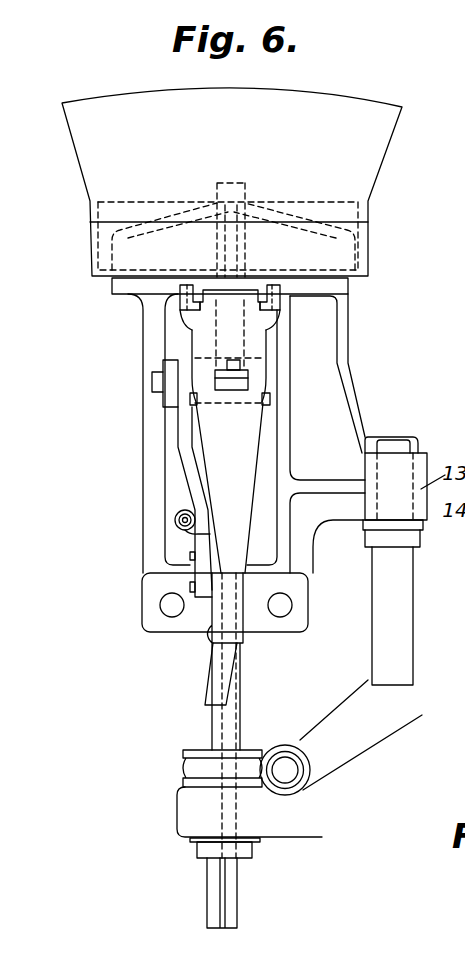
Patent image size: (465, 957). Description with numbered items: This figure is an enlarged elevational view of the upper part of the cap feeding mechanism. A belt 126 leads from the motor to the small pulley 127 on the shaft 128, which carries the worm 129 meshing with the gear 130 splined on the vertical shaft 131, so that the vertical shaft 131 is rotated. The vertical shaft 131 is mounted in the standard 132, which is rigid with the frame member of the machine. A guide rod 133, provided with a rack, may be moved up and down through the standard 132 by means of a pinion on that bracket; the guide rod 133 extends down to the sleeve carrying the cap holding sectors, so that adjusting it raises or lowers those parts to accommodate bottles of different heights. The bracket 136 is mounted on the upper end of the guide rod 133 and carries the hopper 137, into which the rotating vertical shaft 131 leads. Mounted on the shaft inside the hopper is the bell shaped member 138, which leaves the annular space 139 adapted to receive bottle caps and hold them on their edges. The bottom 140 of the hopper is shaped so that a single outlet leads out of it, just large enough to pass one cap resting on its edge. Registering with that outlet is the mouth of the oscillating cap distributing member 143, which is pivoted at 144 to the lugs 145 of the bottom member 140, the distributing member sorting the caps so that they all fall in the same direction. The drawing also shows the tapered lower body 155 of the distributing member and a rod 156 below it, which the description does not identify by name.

The belt 126 is at (333, 703).
The small pulley 127 is at (310, 736).
The shaft 128 is at (290, 772).
The worm 129 is at (308, 751).
The gear 130 is at (250, 749).
The vertical shaft 131 is at (235, 238).
The standard 132 is at (190, 803).
The guide rod 133 is at (384, 605).
The bracket 136 is at (342, 363).
The hopper 137 is at (353, 188).
The bell shaped member 138 is at (309, 220).
The annular space 139 is at (108, 256).
The bottom of hopper 140 is at (370, 231).
The oscillating cap distributing member 143 is at (200, 330).
The pivot 144 is at (188, 283).
The lugs 145 is at (192, 302).
The cone 155 is at (246, 453).
The rod 156 is at (217, 657).